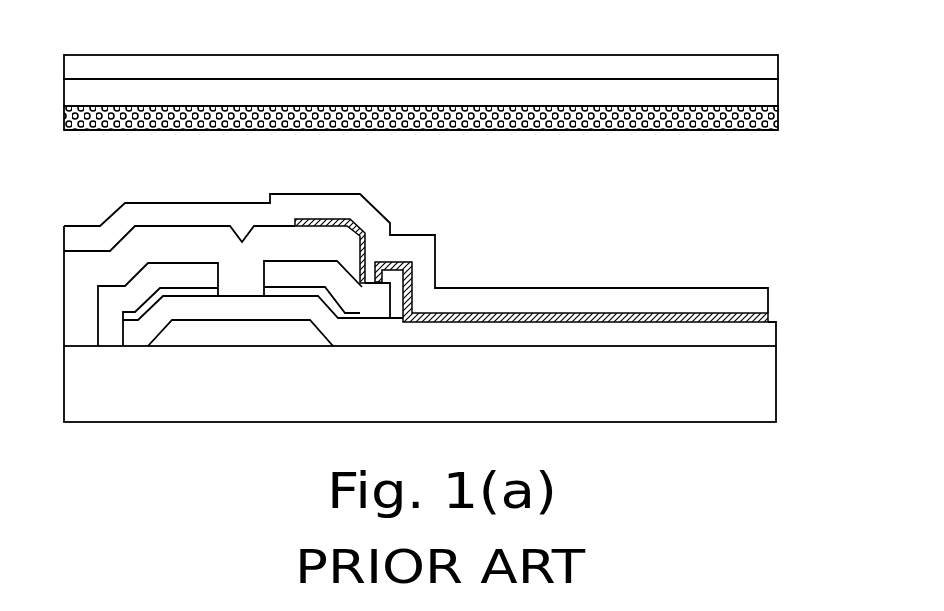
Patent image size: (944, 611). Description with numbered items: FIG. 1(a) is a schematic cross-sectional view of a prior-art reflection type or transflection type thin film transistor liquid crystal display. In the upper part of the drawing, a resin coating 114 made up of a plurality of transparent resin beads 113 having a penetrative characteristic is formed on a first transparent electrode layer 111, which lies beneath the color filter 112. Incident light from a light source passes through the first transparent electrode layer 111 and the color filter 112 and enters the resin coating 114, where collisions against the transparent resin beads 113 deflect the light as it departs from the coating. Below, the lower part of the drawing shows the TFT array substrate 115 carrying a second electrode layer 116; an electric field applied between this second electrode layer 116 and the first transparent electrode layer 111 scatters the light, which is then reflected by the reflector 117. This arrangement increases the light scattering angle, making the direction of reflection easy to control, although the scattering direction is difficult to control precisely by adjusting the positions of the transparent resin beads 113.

The first transparent electrode layer 111 is at (762, 68).
The color filter 112 is at (762, 97).
The transparent resin beads 113 is at (760, 117).
The resin coating 114 is at (755, 130).
The TFT array substrate 115 is at (753, 378).
The second electrode layer 116 is at (762, 316).
The reflector 117 is at (758, 302).